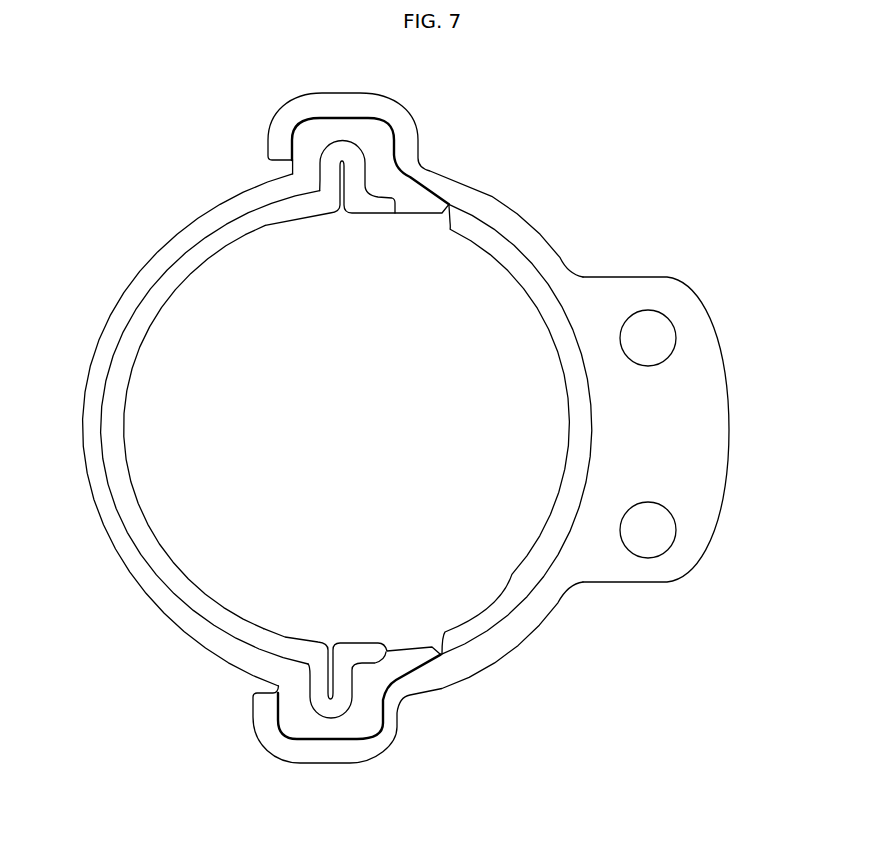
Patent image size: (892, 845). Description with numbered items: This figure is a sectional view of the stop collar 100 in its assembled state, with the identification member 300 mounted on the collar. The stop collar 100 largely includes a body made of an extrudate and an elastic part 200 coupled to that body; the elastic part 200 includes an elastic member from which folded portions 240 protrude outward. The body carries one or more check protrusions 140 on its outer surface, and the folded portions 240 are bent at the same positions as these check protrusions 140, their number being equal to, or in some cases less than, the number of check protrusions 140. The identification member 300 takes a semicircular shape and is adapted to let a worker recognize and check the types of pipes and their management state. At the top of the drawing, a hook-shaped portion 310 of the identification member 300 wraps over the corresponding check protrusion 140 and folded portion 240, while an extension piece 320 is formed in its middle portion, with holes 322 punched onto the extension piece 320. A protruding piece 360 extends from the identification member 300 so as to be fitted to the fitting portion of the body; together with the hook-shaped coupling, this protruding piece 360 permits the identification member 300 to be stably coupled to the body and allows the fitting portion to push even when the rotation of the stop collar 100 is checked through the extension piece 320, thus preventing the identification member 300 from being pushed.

The stop collar 100 is at (168, 218).
The check protrusions 140 is at (293, 712).
The elastic part 200 is at (145, 553).
The folded portions 240 is at (350, 700).
The identification member 300 is at (503, 193).
The upper hook tab 310 is at (362, 103).
The extension piece 320 is at (657, 285).
The holes 322 is at (648, 530).
The protruding piece 360 is at (572, 453).